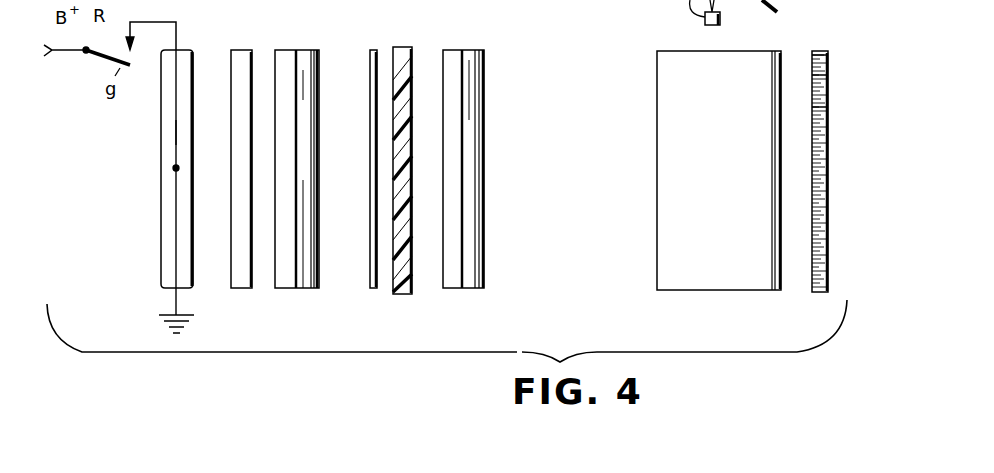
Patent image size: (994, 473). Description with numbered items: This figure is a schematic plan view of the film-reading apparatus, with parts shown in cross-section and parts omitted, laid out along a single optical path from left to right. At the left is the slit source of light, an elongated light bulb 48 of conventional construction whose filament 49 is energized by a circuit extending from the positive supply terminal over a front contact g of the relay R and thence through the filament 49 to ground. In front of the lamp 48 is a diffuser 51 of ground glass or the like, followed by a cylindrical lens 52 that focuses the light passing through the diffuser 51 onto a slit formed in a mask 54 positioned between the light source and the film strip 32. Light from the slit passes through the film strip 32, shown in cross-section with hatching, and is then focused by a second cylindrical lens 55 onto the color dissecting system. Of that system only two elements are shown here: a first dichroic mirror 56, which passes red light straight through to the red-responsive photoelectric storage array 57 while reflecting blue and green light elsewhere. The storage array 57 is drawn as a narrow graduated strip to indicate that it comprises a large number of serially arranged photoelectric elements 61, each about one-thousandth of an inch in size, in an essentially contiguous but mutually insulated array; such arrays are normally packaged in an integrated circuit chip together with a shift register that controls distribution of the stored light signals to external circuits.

The film strip 32 is at (411, 47).
The elongated light bulb 48 is at (190, 148).
The filament 49 is at (176, 133).
The diffuser 51 is at (244, 50).
The cylindrical lens 52 is at (293, 50).
The mask 54 is at (370, 66).
The second cylindrical lens 55 is at (484, 82).
The first dichroic mirror 56 is at (672, 138).
The first photoelectric storage array 57 is at (828, 156).
The photoelectric elements 61 is at (826, 53).